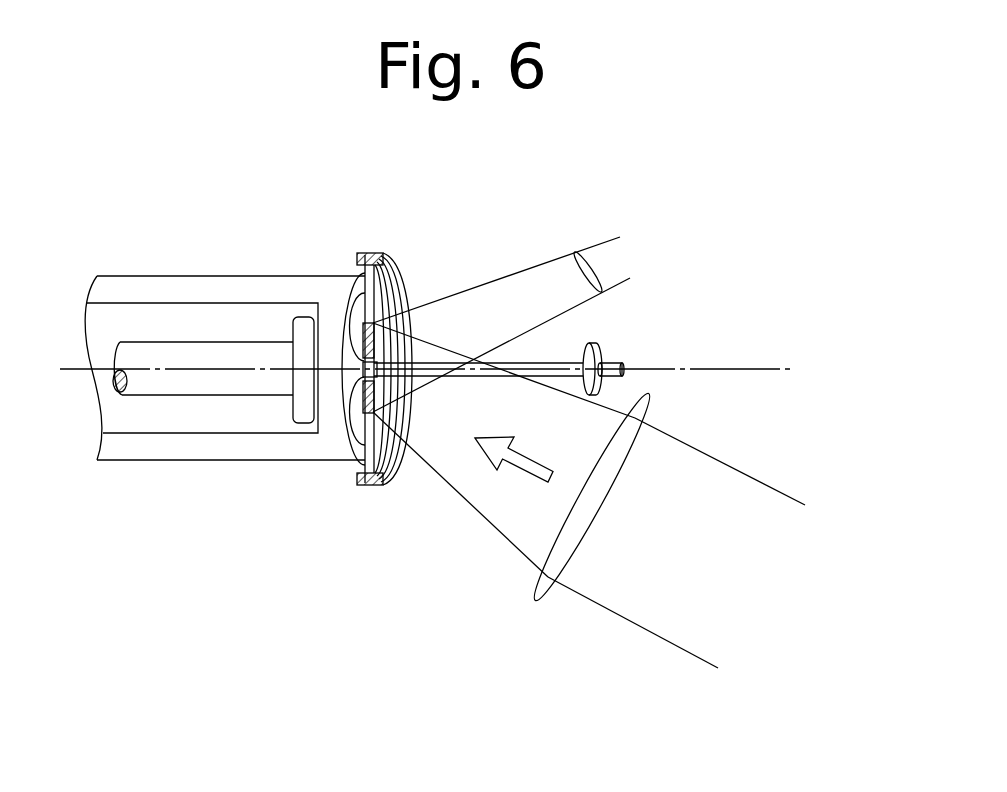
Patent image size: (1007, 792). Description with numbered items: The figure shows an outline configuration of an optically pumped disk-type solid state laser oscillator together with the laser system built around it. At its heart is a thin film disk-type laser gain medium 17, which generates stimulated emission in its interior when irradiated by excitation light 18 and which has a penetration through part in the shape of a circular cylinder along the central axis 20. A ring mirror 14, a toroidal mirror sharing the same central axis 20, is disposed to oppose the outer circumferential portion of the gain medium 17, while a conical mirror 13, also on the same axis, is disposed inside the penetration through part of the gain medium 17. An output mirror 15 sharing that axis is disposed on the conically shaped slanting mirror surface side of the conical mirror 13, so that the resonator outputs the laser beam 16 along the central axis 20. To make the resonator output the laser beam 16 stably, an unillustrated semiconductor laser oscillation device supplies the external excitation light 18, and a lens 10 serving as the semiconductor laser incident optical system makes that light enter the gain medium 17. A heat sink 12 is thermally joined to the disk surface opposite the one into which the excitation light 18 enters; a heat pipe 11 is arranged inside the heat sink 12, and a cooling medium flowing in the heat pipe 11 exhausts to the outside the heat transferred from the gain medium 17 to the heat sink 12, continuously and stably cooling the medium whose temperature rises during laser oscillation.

The lens 10 is at (600, 503).
The heat pipe 11 is at (136, 350).
The heat sink 12 is at (124, 285).
The conical mirror 13 is at (392, 292).
The ring mirror 14 is at (370, 254).
The output mirror 15 is at (599, 343).
The laser beam 16 is at (628, 366).
The thin film disk-type laser gain medium 17 is at (366, 403).
The excitation light 18 is at (530, 468).
The central axis 20 is at (735, 373).